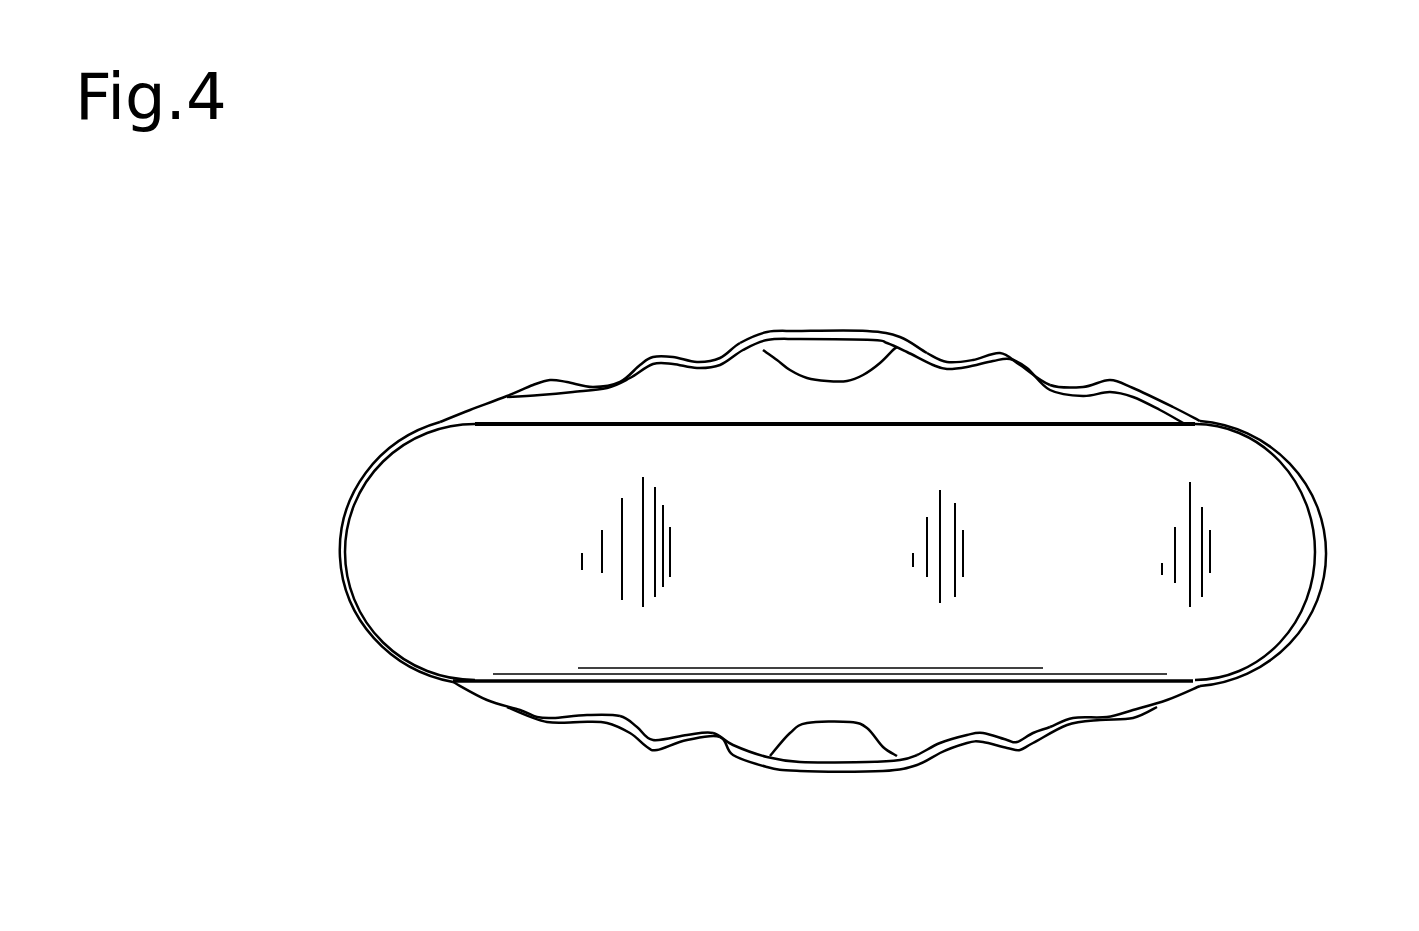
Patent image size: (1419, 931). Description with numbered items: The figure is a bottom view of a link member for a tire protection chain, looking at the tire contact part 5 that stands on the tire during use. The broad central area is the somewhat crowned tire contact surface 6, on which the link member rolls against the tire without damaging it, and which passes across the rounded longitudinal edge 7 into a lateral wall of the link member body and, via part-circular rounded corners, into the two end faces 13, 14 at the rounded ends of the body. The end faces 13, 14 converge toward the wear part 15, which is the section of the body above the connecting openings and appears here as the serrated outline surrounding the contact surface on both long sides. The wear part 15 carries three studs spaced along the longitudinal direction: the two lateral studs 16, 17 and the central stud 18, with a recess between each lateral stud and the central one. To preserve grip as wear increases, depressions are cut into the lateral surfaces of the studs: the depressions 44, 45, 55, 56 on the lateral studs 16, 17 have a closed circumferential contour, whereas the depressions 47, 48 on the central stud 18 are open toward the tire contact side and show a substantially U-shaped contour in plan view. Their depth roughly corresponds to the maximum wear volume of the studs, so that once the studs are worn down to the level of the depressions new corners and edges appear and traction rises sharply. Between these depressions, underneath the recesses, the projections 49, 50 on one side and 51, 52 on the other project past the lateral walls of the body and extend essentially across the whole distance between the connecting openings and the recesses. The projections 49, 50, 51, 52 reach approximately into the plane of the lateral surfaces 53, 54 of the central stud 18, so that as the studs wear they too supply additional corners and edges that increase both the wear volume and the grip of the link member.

The tire contact part 5 is at (928, 424).
The tire contact surface 6 is at (1253, 520).
The rounded longitudinal edge 7 is at (1180, 420).
The end face 13 is at (1313, 593).
The end face 14 is at (343, 547).
The wear part 15 is at (1330, 535).
The lateral stud 16 is at (490, 690).
The lateral stud 17 is at (1140, 390).
The central stud 18 is at (895, 715).
The depression 44 is at (1120, 383).
The depression 45 is at (533, 385).
The depression 47 is at (813, 360).
The depression 48 is at (803, 745).
The projection 49 is at (650, 352).
The projection 50 is at (1008, 355).
The projection 51 is at (643, 740).
The projection 52 is at (1013, 752).
The lateral surface 53 is at (832, 770).
The lateral surface 54 is at (829, 324).
The depression 55 is at (1127, 717).
The depression 56 is at (537, 710).